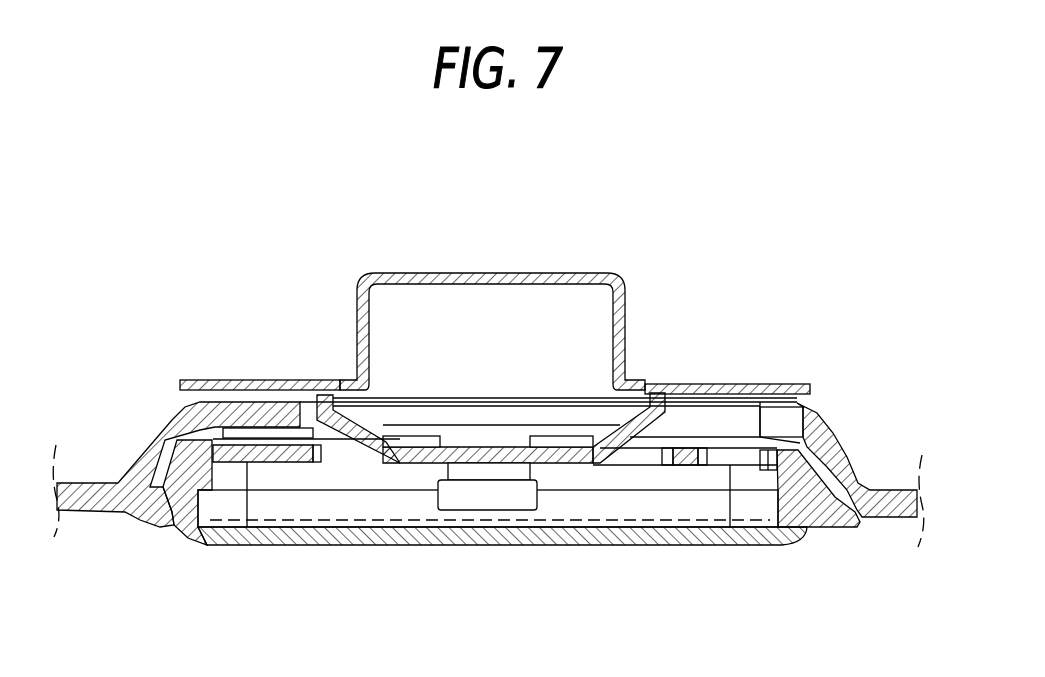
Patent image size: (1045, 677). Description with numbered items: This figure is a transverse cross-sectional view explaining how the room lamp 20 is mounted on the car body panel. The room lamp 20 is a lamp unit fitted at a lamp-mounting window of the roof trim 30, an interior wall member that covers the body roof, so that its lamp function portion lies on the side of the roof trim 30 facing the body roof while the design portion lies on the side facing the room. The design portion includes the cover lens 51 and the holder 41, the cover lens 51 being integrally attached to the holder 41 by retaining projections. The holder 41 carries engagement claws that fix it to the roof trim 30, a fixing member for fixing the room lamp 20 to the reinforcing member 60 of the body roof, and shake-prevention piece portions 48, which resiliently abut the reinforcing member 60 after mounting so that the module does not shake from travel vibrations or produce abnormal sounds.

The room lamp 20 is at (553, 569).
The roof trim 30 is at (846, 454).
The holder 41 is at (477, 447).
The shake-prevention piece portions 48 is at (308, 410).
The cover lens 51 is at (404, 547).
The reinforcing member 60 is at (518, 272).